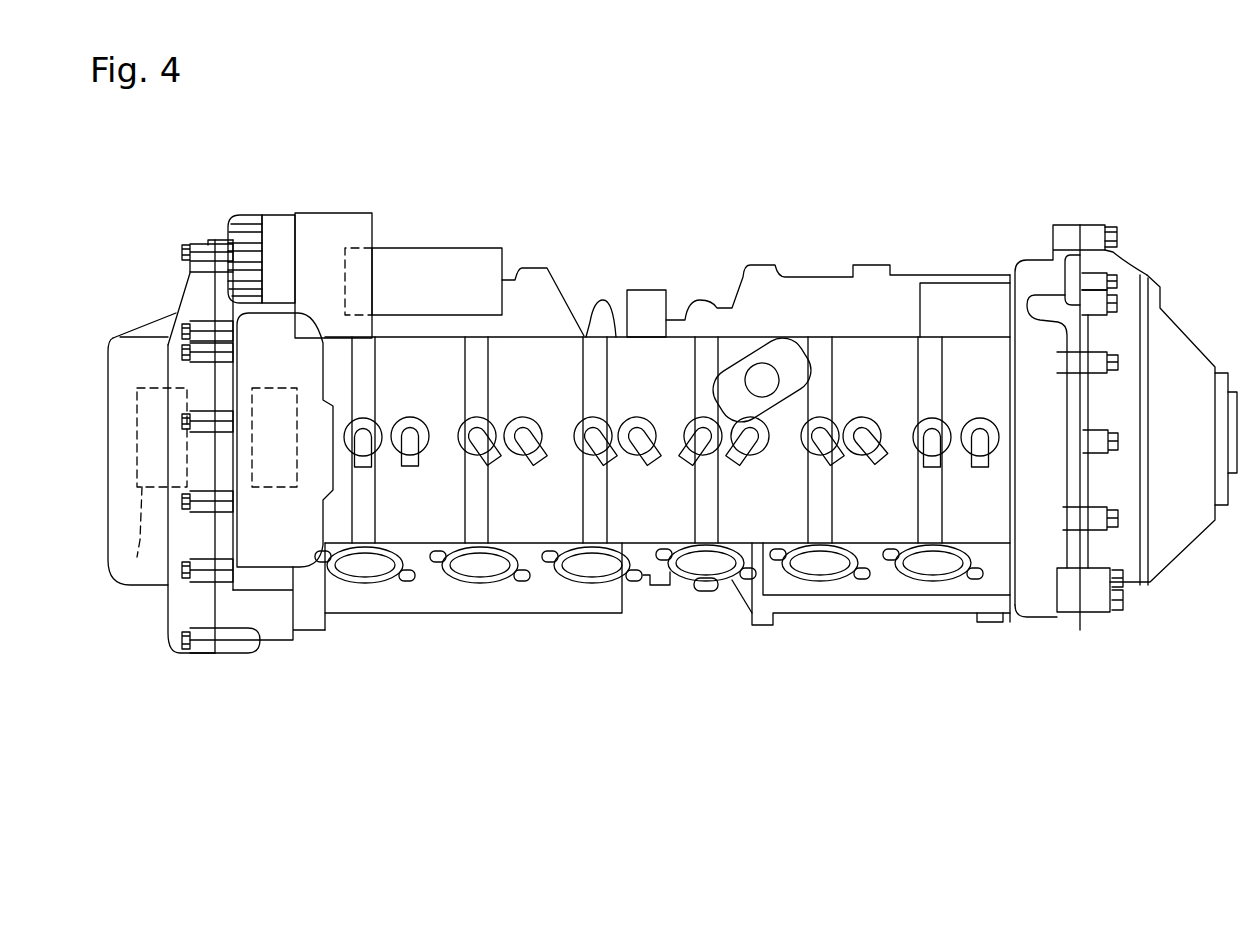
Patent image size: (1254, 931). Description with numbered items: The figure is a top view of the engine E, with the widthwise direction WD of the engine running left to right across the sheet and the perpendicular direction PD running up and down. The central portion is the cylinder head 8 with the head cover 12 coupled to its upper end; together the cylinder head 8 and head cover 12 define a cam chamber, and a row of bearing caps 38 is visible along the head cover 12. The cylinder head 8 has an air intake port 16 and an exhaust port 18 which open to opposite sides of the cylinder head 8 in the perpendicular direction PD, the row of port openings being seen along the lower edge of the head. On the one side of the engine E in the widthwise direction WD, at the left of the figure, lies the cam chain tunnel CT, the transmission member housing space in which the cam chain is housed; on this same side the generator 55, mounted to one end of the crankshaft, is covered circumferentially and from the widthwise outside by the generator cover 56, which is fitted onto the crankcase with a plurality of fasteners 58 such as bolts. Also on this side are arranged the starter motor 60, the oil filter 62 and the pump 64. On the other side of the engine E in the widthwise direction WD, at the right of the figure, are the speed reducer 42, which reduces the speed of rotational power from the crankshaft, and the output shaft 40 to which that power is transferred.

The cylinder head 8 is at (338, 612).
The head cover 12 is at (964, 357).
The air intake port 16 is at (947, 575).
The exhaust port 18 is at (373, 570).
The camshaft bearing cap 38 is at (412, 458).
The output shaft 40 is at (1238, 503).
The speed reducer 42 is at (1172, 576).
The generator 55 is at (137, 557).
The generator cover 56 is at (113, 338).
The fasteners 58 is at (190, 577).
The starter motor 60 is at (473, 248).
The oil filter 62 is at (268, 214).
The pump 64 is at (240, 612).
The engine E is at (207, 186).
The cam chain tunnel CT is at (252, 450).
The widthwise direction WD is at (578, 72).
The perpendicular direction PD is at (782, 99).